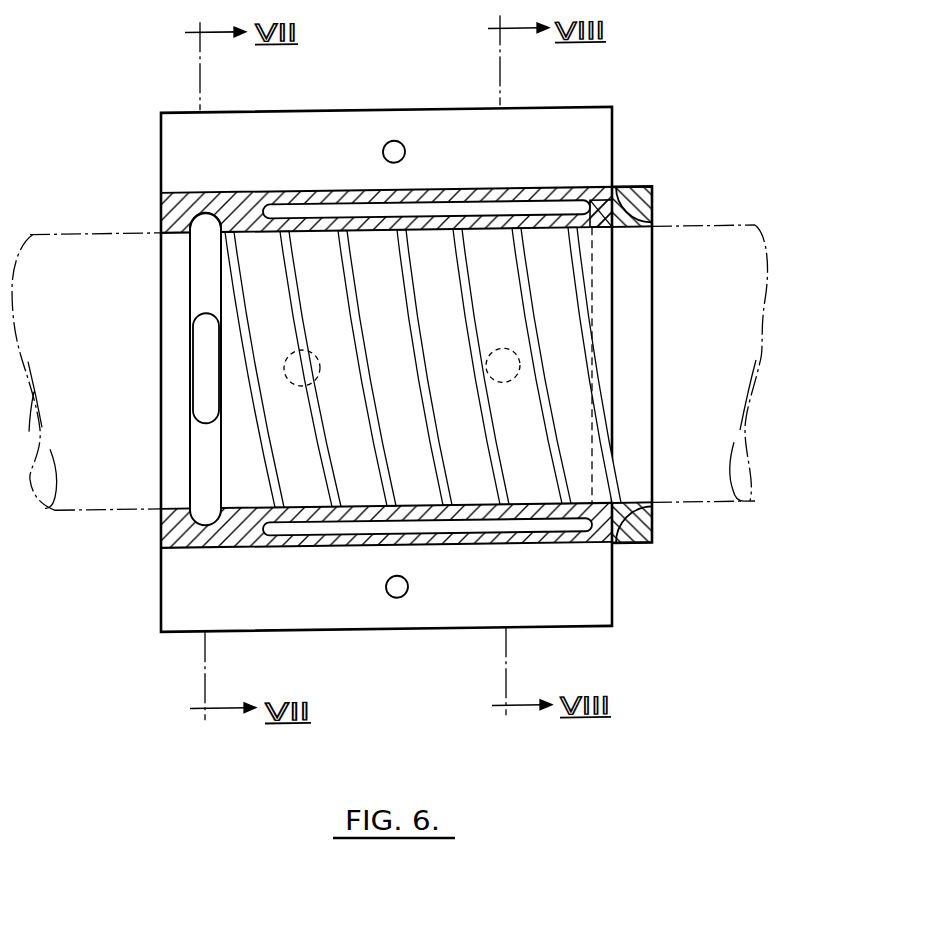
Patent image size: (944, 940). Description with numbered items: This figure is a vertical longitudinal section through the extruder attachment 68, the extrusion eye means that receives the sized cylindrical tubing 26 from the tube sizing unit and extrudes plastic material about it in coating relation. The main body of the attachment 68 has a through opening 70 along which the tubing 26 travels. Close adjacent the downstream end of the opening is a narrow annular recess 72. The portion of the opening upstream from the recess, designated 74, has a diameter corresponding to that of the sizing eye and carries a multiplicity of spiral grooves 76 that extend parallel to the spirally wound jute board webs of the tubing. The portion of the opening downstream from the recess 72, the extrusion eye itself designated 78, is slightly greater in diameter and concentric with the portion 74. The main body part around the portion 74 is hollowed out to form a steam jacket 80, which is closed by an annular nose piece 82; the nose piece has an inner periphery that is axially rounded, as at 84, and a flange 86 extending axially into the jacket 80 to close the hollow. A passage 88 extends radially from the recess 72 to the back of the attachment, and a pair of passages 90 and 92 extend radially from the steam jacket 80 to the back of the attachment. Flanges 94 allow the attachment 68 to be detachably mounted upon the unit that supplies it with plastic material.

The cylindrical tubing 26 is at (687, 511).
The extruder attachment 68 is at (660, 134).
The through opening 70 is at (423, 367).
The annular recess 72 is at (200, 480).
The upstream portion of the opening 74 is at (415, 516).
The spiral grooves 76 is at (486, 406).
The extrusion eye 78 is at (175, 235).
The steam jacket 80 is at (487, 216).
The annular nose piece 82 is at (652, 274).
The axially rounded inner periphery 84 is at (652, 224).
The flange of nose piece 86 is at (598, 213).
The passage 88 is at (205, 393).
The passage 90 is at (318, 364).
The passage 92 is at (504, 352).
The flanges 94 is at (335, 117).